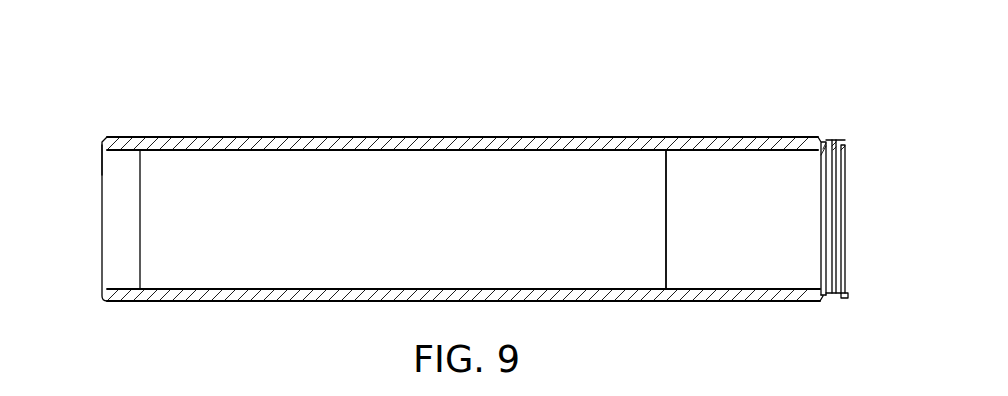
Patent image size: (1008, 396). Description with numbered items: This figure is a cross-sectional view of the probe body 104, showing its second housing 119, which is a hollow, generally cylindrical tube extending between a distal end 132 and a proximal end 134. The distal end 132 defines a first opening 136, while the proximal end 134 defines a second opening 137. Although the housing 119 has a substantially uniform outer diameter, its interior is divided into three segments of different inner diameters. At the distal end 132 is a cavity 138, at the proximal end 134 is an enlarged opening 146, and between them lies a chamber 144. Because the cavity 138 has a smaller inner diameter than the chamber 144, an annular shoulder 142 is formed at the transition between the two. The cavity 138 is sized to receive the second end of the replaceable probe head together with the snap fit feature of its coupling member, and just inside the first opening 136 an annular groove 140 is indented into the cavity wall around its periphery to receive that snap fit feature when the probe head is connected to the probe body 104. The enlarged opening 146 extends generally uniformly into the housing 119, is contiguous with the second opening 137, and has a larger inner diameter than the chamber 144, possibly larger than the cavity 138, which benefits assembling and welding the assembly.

The probe body 104 is at (535, 118).
The second housing 119 is at (557, 300).
The chamber 144 is at (445, 288).
The proximal end 134 is at (117, 300).
The second opening 137 is at (101, 157).
The enlarged opening 146 is at (116, 146).
The annular shoulder 142 is at (670, 144).
The cavity 138 is at (750, 273).
The annular groove 140 is at (834, 140).
The first opening 136 is at (847, 157).
The distal end 132 is at (840, 298).